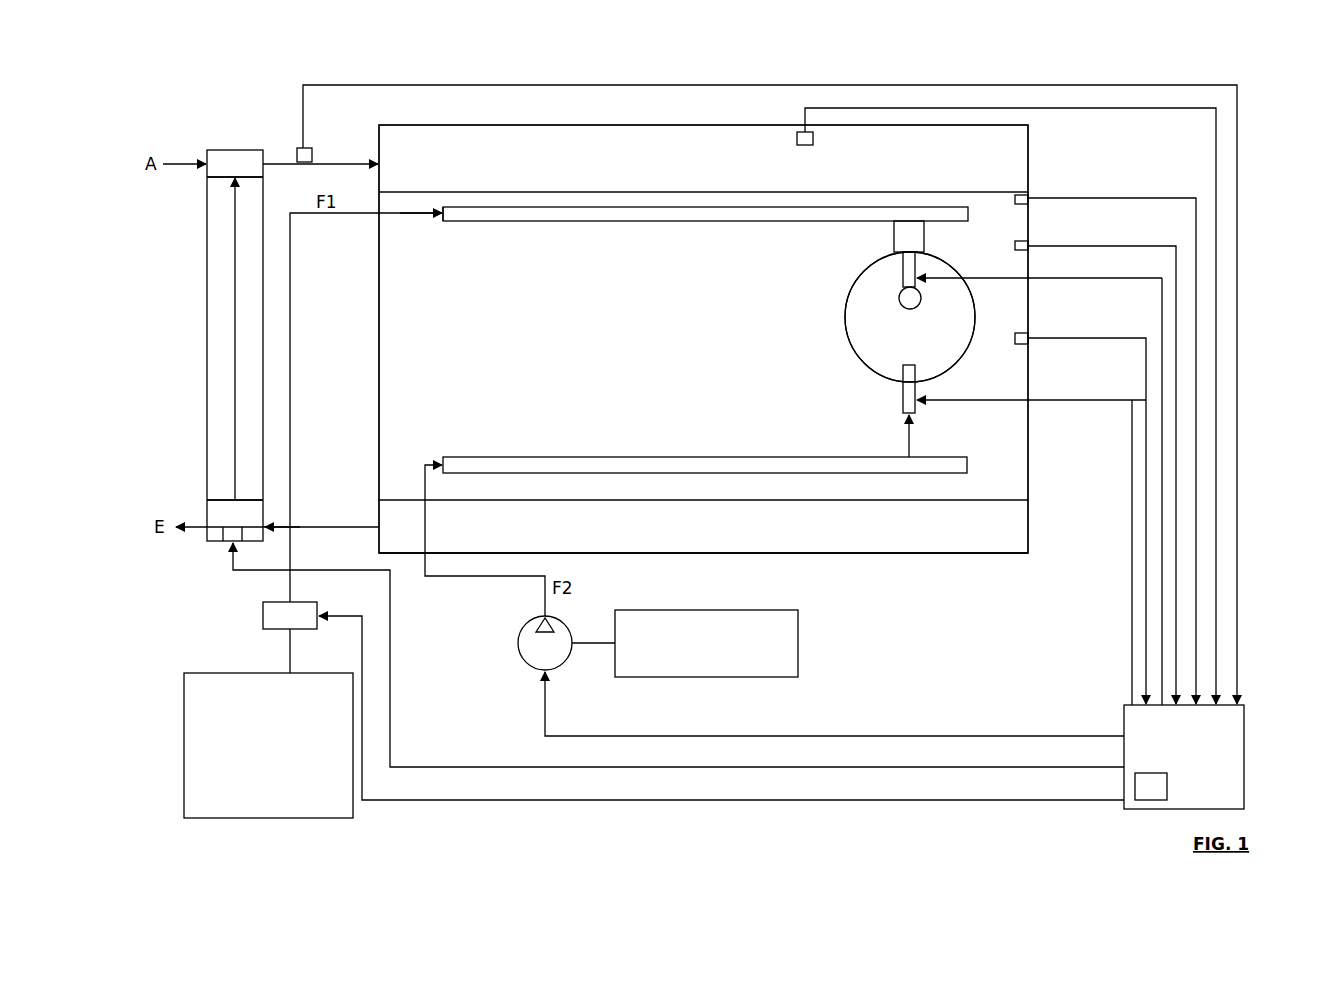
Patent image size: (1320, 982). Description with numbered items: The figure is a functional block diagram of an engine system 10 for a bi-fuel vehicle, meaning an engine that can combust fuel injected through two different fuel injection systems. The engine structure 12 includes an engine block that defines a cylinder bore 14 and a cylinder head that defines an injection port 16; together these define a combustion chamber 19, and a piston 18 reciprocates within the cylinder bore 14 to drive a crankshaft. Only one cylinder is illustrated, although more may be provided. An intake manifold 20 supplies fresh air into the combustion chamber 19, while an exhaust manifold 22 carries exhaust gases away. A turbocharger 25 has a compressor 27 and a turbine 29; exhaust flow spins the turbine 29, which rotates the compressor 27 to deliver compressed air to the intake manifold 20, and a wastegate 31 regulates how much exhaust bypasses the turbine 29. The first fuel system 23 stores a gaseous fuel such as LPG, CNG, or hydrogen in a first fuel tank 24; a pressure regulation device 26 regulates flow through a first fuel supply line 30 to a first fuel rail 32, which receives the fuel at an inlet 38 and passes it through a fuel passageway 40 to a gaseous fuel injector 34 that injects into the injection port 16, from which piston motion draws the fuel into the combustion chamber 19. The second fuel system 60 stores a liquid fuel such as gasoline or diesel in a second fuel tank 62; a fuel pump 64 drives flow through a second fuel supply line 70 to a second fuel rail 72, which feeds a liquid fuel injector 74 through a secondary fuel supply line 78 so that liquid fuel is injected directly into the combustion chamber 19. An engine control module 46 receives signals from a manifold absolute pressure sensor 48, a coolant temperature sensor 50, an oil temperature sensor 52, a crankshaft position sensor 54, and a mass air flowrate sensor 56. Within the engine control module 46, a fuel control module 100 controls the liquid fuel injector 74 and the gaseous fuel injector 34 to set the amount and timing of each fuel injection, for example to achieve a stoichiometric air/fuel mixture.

The engine system 10 is at (170, 82).
The engine structure 12 is at (379, 362).
The cylinder bore 14 is at (862, 364).
The injection port 16 is at (921, 300).
The piston 18 is at (868, 285).
The combustion chamber 19 is at (911, 327).
The intake manifold 20 is at (379, 143).
The exhaust manifold 22 is at (702, 553).
The first fuel system 23 is at (184, 592).
The first fuel tank 24 is at (268, 673).
The turbocharger 25 is at (207, 298).
The pressure regulation device 26 is at (263, 618).
The compressor 27 is at (215, 178).
The turbine 29 is at (215, 499).
The first fuel supply line 30 is at (290, 322).
The wastegate 31 is at (242, 535).
The first fuel rail 32 is at (626, 207).
The gaseous fuel injector 34 is at (916, 270).
The inlet 38 is at (443, 221).
The fuel passageway 40 is at (924, 240).
The engine control module 46 is at (1124, 720).
The manifold absolute pressure sensor 48 is at (797, 138).
The coolant temperature sensor 50 is at (1028, 243).
The oil temperature sensor 52 is at (1015, 195).
The crankshaft position sensor 54 is at (1028, 344).
The mass air flowrate sensor 56 is at (297, 155).
The second fuel system 60 is at (852, 612).
The second fuel tank 62 is at (740, 610).
The fuel pump 64 is at (518, 643).
The second fuel supply line 70 is at (444, 577).
The second fuel rail 72 is at (920, 473).
The liquid fuel injector 74 is at (916, 378).
The secondary fuel supply line 78 is at (908, 432).
The fuel control module 100 is at (1146, 800).